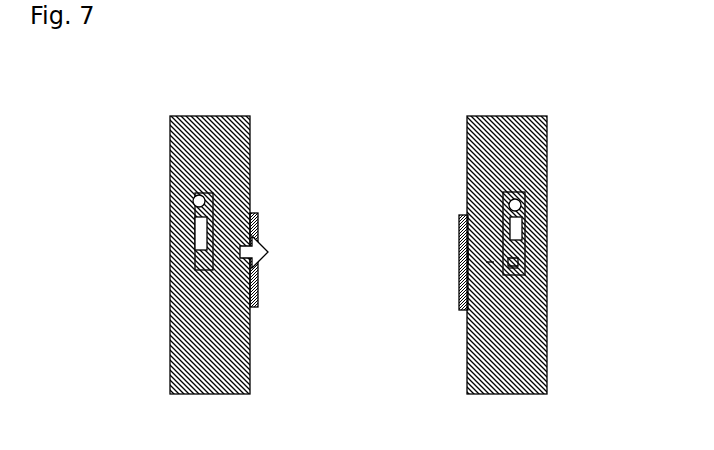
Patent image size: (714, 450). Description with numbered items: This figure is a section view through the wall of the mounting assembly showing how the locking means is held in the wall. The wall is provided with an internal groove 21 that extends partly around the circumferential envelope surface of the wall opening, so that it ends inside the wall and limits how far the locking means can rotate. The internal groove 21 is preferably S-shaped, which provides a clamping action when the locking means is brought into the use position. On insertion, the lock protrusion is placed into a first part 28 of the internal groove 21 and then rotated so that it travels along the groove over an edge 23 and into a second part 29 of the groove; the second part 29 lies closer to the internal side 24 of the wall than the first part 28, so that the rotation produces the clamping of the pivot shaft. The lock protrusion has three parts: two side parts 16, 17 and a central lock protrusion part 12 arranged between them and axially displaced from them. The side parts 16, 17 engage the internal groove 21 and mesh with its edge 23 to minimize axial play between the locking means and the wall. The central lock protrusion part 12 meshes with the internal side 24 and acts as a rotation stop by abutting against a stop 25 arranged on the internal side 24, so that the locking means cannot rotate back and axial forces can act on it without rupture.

The internal side 24 is at (466, 167).
The stop 25 is at (460, 245).
The internal groove 21 is at (505, 212).
The first part of the internal groove 28 is at (512, 206).
The lock protrusion side part 16 is at (514, 246).
The central lock protrusion part 12 is at (462, 257).
The edge of the internal groove 23 is at (490, 266).
The second part of the internal groove 29 is at (512, 262).
The lock protrusion side part 17 is at (514, 266).